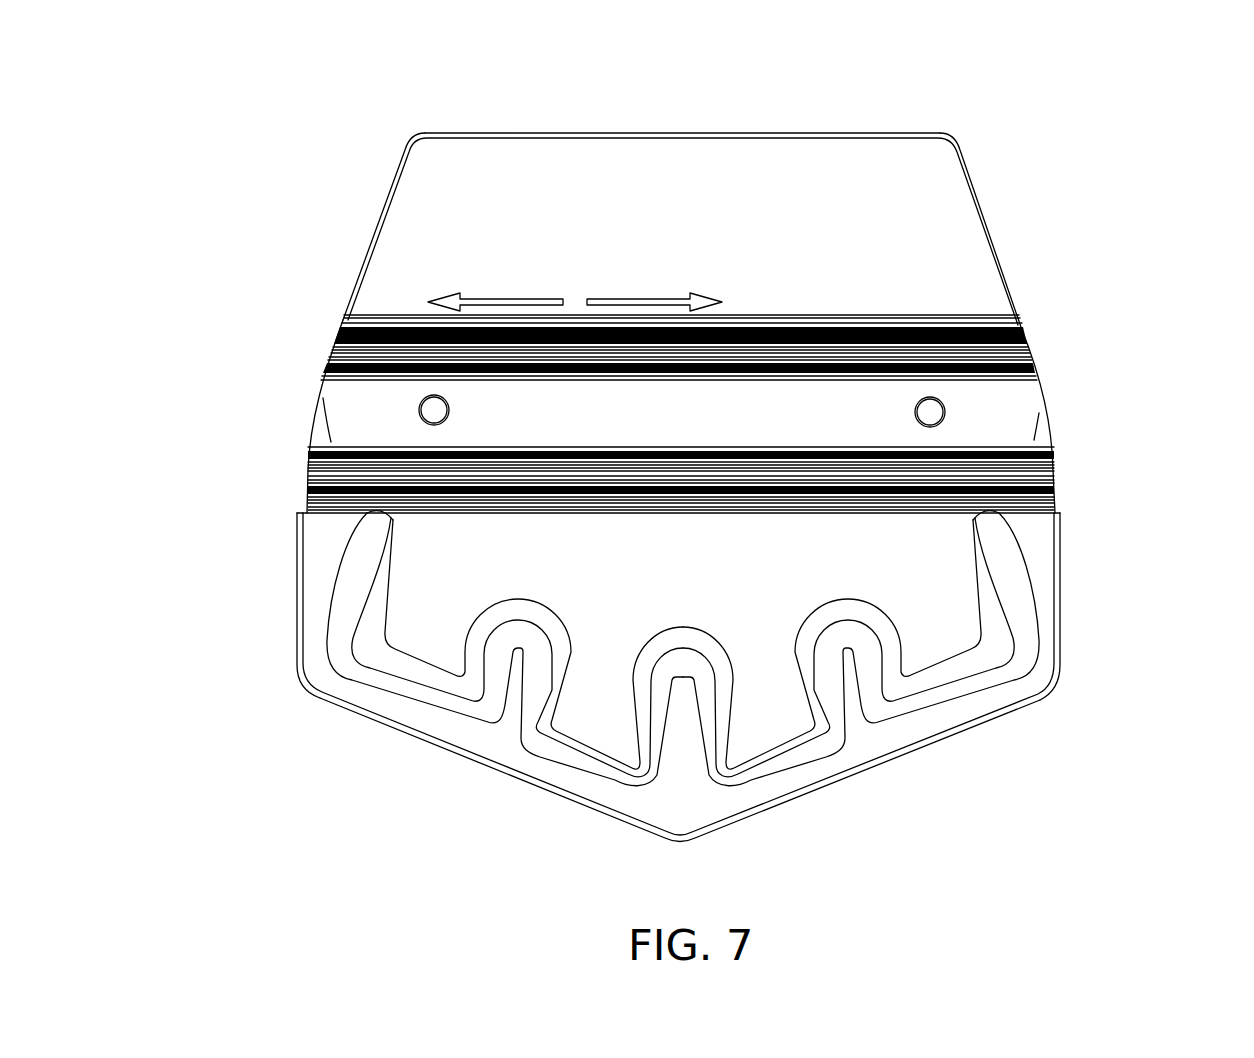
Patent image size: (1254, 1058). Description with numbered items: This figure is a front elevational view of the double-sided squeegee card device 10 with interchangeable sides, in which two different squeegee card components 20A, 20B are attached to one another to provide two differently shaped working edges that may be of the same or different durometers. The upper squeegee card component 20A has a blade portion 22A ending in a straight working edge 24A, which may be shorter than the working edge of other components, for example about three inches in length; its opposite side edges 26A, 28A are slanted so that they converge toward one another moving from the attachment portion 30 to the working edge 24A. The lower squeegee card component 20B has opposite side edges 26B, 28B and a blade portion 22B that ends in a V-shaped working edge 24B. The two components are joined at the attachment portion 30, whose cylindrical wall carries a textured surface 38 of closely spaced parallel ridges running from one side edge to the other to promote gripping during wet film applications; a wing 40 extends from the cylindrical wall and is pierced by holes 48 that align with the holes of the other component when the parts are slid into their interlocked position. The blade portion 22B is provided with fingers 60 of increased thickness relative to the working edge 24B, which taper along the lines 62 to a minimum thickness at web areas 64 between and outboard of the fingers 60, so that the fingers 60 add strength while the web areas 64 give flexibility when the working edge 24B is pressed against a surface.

The double-sided squeegee card device 10 is at (1150, 152).
The squeegee card component 20A is at (1000, 280).
The squeegee card component 20B is at (1062, 588).
The blade portion 22A is at (680, 212).
The blade portion 22B is at (457, 570).
The straight working edge 24A is at (612, 132).
The V-shaped working edge 24B is at (885, 768).
The side edge 26A is at (362, 252).
The side edge 26B is at (1068, 655).
The side edge 28A is at (985, 208).
The side edge 28B is at (300, 570).
The attachment portion 30 is at (330, 345).
The textured surface 38 is at (1005, 343).
The wing 40 is at (1018, 410).
The holes 48 is at (443, 408).
The fingers 60 is at (417, 650).
The lines 62 is at (424, 686).
The web areas 64 is at (513, 677).